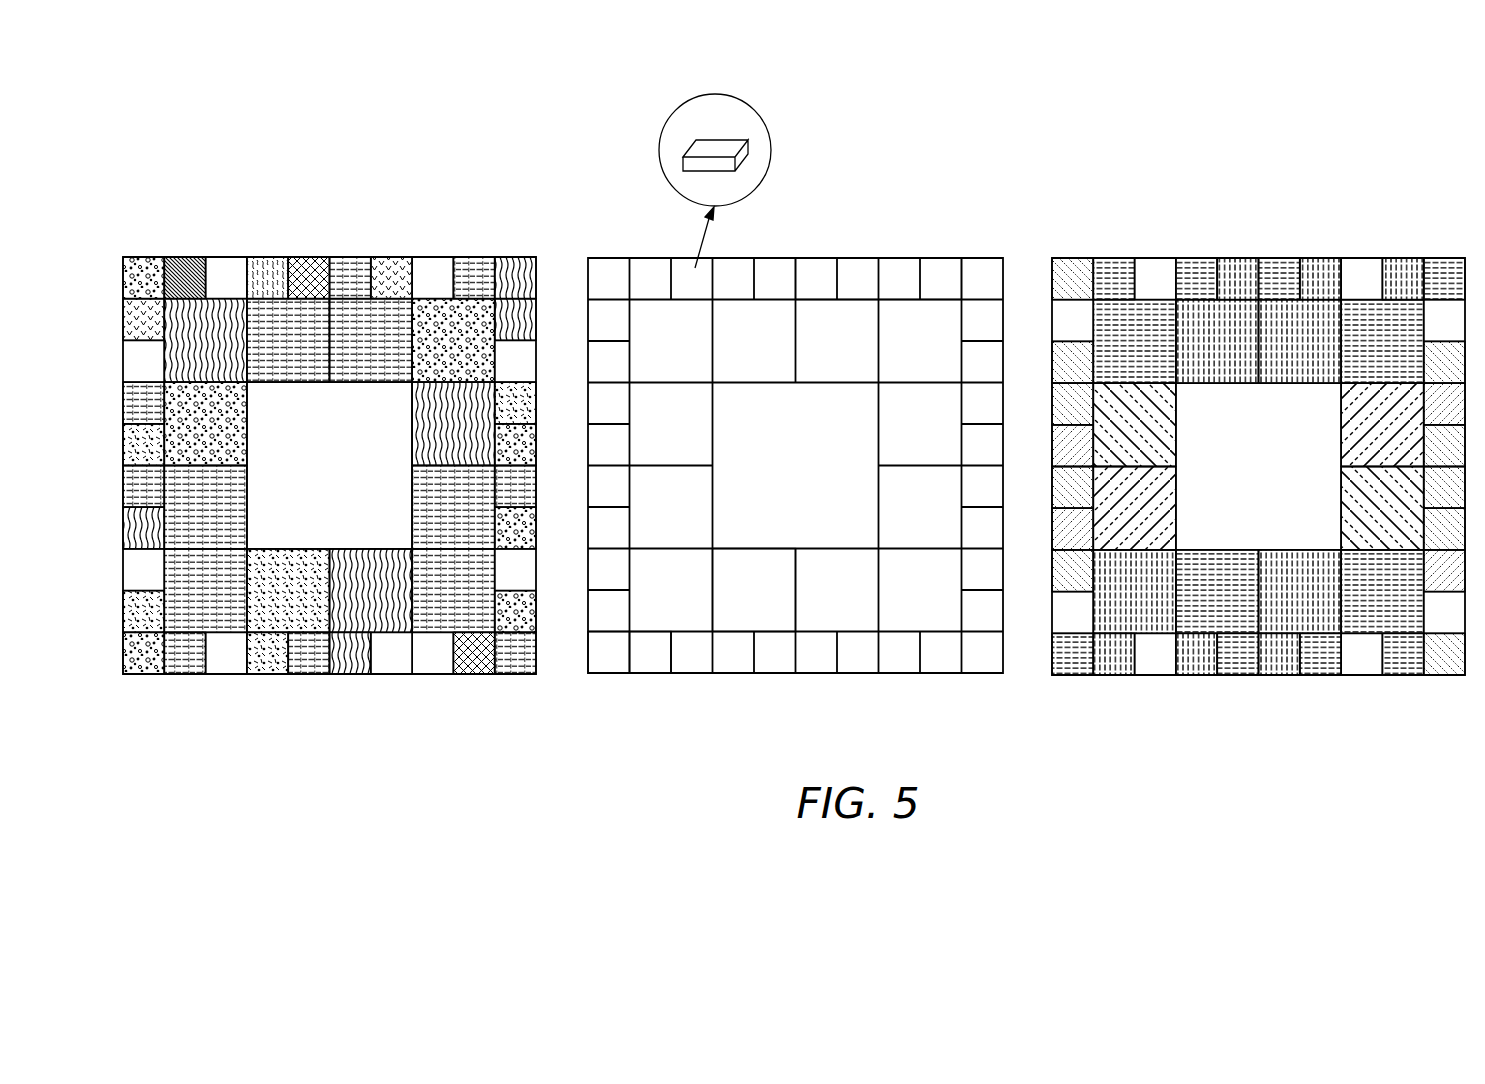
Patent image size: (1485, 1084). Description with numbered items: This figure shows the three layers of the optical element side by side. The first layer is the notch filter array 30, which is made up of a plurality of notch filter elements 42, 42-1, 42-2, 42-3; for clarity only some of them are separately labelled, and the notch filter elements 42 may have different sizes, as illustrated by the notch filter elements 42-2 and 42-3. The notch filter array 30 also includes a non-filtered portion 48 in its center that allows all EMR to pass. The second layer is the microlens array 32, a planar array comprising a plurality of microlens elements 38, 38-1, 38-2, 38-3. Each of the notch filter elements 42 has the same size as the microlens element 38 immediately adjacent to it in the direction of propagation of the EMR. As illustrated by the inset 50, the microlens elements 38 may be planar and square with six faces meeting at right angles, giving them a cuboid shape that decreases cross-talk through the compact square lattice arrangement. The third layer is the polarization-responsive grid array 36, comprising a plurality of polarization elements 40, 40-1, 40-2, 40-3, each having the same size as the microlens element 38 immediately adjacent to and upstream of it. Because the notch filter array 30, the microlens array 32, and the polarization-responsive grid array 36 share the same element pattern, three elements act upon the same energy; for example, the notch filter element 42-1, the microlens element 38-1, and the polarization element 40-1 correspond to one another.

The notch filter array 30 is at (320, 466).
The microlens array 32 is at (789, 403).
The polarization-responsive grid array 36 is at (1248, 408).
The microlens elements 38 is at (942, 265).
The microlens element 38-1 is at (608, 663).
The microlens element 38-2 is at (657, 665).
The microlens element 38-3 is at (738, 610).
The polarization elements 40 is at (1398, 265).
The polarization element 40-1 is at (1067, 665).
The polarization element 40-2 is at (1117, 665).
The polarization element 40-3 is at (1197, 610).
The notch filter elements 42 is at (388, 268).
The notch filter element 42-1 is at (141, 657).
The notch filter element 42-2 is at (190, 660).
The notch filter element 42-3 is at (265, 613).
The non-filtered portion 48 is at (394, 518).
The inset 50 is at (742, 100).